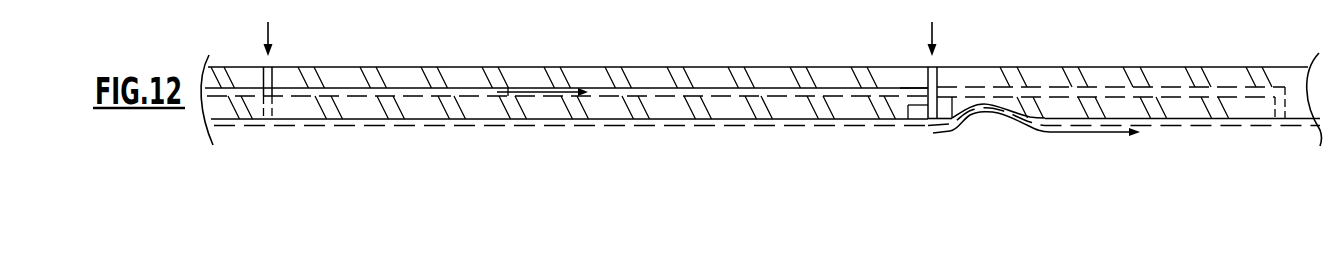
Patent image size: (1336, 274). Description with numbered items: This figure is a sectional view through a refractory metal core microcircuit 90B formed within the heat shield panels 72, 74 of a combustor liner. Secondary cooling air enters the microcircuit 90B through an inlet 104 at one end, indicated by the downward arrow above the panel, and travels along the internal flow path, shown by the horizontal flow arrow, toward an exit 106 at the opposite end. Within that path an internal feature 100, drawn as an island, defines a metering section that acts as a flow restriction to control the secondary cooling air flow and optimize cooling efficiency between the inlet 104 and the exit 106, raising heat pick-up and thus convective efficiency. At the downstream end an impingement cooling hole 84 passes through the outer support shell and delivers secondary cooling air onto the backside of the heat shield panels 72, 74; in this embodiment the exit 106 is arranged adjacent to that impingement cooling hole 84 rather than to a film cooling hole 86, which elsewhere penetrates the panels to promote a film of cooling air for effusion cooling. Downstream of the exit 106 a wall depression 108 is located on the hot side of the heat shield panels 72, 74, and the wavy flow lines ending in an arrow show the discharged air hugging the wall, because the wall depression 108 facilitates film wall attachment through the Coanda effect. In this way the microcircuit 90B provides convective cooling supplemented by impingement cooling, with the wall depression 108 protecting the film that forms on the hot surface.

The heat shield panel 72 is at (203, 124).
The heat shield panel 74 is at (1097, 58).
The film cooling hole 86 is at (636, 67).
The microcircuit 90B is at (527, 91).
The inlet 104 is at (273, 78).
The internal feature 100 is at (884, 92).
The impingement cooling hole 84 is at (933, 78).
The exit 106 is at (911, 105).
The wall depression 108 is at (995, 114).